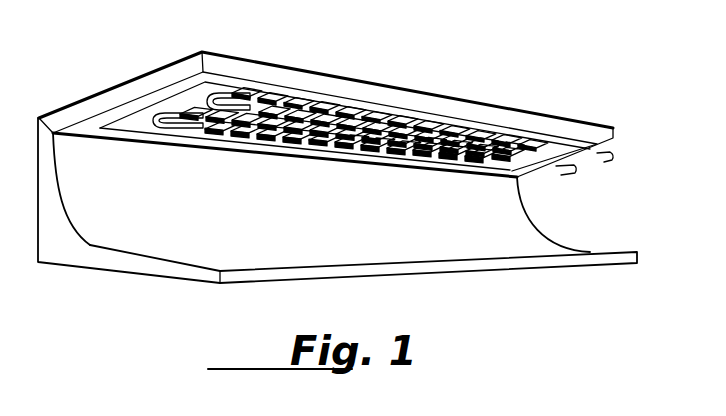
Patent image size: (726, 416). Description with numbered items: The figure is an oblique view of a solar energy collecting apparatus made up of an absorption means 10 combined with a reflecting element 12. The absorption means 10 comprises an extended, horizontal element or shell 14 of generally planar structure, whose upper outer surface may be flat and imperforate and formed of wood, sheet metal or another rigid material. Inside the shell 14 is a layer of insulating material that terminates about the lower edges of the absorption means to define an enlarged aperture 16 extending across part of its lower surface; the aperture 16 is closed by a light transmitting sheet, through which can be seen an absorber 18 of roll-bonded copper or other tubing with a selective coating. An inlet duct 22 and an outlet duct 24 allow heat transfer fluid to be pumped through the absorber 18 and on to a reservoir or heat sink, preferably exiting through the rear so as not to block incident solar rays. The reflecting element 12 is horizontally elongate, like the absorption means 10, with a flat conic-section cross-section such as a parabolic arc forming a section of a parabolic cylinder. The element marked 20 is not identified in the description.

The absorption means 10 is at (352, 174).
The reflecting element 12 is at (85, 246).
The extended horizontal element 14 is at (372, 80).
The enlarged aperture 16 is at (424, 112).
The absorber 18 is at (486, 134).
The special function key 20 is at (289, 108).
The inlet duct 22 is at (561, 176).
The outlet duct 24 is at (607, 162).